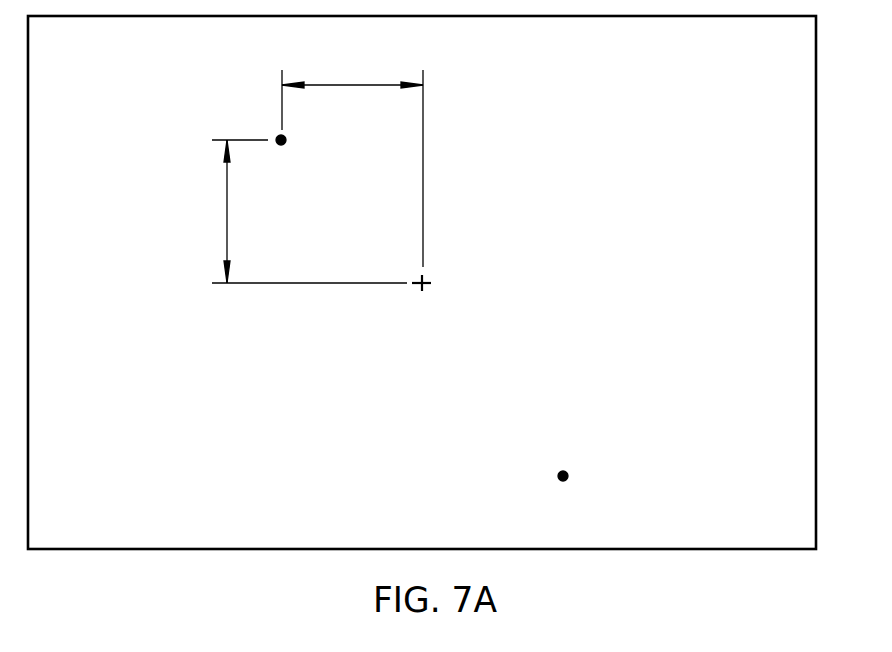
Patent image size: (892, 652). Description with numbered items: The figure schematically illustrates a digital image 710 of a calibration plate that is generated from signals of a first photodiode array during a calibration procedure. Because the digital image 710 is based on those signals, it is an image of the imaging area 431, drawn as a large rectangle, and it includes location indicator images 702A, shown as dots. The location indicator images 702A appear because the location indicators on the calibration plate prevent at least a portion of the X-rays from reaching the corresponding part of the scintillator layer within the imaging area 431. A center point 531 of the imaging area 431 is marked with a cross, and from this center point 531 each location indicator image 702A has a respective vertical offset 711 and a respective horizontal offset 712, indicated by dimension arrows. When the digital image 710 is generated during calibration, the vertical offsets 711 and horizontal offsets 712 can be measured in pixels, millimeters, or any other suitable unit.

The imaging area 431 is at (167, 17).
The digital image 710 is at (151, 564).
The horizontal offset 712 is at (325, 84).
The vertical offset 711 is at (226, 205).
The location indicator image 702A is at (287, 140).
The center point 531 is at (427, 278).